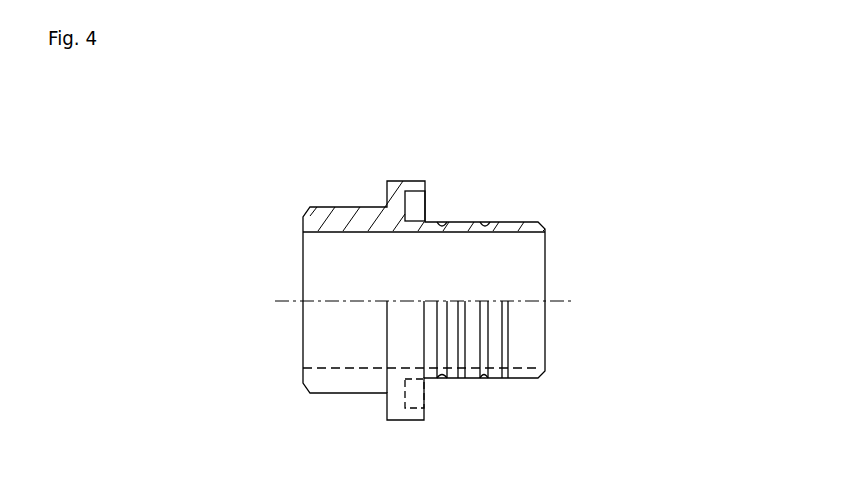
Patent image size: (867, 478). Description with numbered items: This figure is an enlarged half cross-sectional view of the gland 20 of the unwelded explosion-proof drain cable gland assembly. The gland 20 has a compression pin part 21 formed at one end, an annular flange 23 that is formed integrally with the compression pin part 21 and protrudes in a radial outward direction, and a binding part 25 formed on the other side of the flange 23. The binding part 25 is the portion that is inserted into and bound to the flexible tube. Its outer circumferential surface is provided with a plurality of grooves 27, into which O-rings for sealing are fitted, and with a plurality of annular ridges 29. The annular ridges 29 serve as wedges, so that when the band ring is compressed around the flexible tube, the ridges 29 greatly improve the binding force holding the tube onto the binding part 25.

The gland 20 is at (323, 177).
The compression pin part 21 is at (347, 386).
The annular flange 23 is at (403, 181).
The binding part 25 is at (528, 378).
The grooves 27 is at (442, 217).
The annular ridges 29 is at (463, 221).